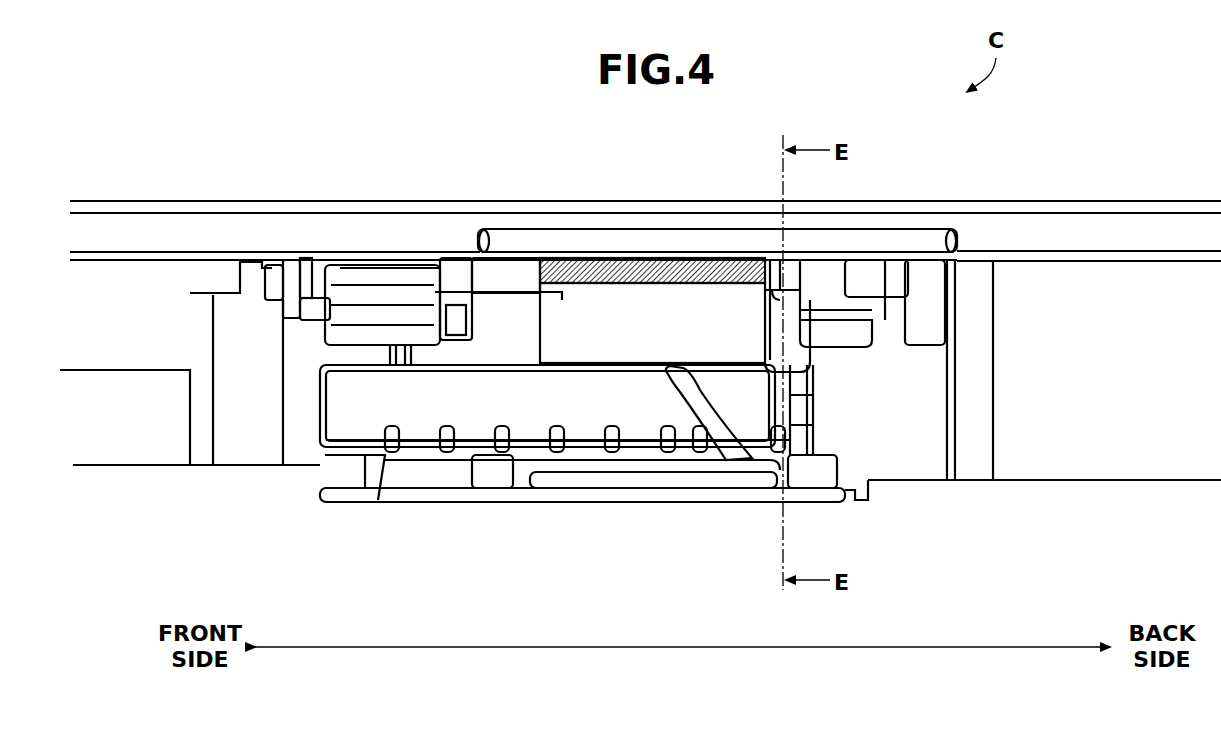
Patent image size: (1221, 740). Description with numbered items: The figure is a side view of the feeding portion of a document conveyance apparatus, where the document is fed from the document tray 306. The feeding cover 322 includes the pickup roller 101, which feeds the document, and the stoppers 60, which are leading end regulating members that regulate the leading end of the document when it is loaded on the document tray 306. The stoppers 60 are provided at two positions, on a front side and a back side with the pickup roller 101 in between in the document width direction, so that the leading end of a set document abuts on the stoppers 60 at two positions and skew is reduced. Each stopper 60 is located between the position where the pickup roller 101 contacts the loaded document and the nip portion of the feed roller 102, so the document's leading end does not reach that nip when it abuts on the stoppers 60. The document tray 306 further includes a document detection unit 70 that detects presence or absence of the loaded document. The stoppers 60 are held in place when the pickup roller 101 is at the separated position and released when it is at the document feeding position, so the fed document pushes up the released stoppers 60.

The stoppers 60 is at (255, 330).
The feeding cover 322 is at (397, 232).
The pickup roller 101 is at (597, 254).
The feed roller 102 is at (682, 296).
The document detection unit 70 is at (688, 460).
The document tray 306 is at (530, 512).